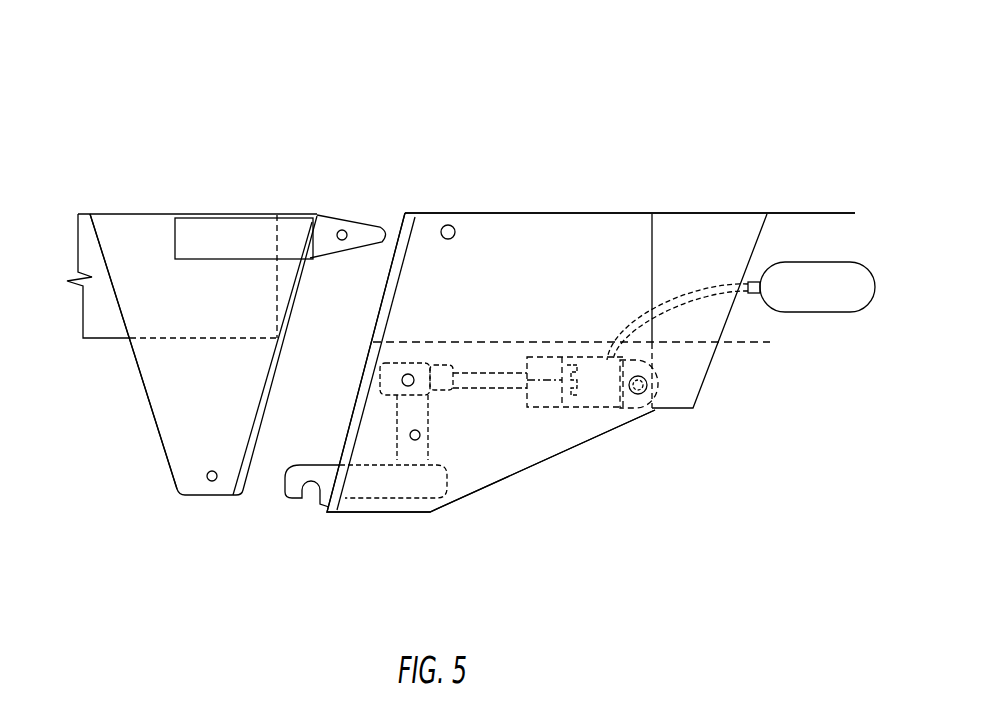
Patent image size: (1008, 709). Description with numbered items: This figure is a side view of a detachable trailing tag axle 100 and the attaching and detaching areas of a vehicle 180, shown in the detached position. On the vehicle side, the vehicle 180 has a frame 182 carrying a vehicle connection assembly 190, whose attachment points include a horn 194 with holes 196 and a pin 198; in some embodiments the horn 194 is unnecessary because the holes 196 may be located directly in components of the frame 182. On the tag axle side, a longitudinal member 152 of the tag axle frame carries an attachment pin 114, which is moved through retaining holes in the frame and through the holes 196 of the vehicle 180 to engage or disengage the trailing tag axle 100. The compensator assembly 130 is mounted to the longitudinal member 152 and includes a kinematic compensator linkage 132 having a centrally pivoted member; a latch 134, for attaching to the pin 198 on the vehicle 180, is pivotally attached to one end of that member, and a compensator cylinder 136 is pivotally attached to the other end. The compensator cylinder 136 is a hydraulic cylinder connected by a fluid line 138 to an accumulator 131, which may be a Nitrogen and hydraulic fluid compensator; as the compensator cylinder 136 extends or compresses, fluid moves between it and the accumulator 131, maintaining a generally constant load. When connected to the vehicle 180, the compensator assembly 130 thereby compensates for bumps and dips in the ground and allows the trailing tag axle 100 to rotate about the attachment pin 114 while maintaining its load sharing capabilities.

The detachable trailing tag axle 100 is at (498, 143).
The attachment pins 114 is at (446, 225).
The compensator assembly 130 is at (502, 443).
The accumulator 131 is at (830, 278).
The compensator linkage 132 is at (413, 453).
The latch 134 is at (287, 492).
The compensator cylinder 136 is at (593, 397).
The fluid line 138 is at (680, 292).
The longitudinal members 152 is at (807, 233).
The vehicle 180 is at (181, 160).
The frame 182 is at (97, 310).
The vehicle connection assembly 190 is at (200, 417).
The horn 194 is at (337, 228).
The holes 196 is at (326, 231).
The pin 198 is at (212, 482).